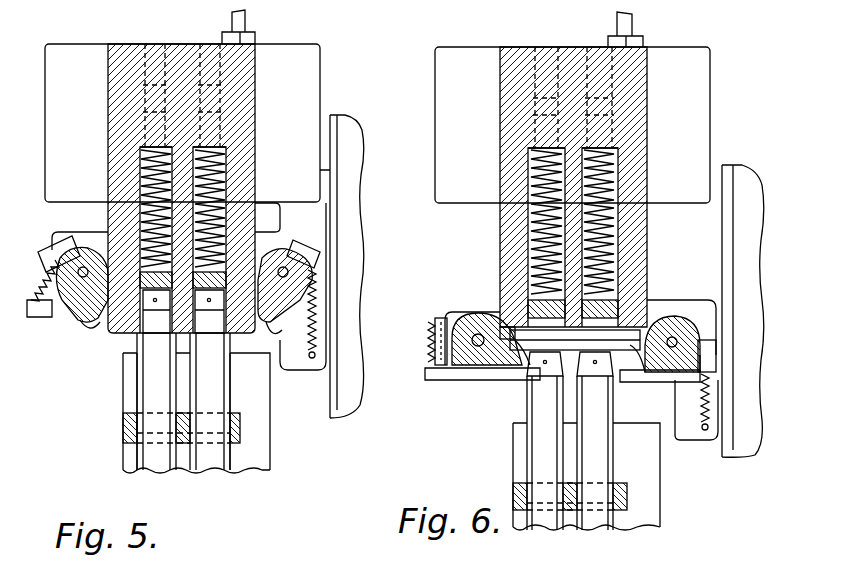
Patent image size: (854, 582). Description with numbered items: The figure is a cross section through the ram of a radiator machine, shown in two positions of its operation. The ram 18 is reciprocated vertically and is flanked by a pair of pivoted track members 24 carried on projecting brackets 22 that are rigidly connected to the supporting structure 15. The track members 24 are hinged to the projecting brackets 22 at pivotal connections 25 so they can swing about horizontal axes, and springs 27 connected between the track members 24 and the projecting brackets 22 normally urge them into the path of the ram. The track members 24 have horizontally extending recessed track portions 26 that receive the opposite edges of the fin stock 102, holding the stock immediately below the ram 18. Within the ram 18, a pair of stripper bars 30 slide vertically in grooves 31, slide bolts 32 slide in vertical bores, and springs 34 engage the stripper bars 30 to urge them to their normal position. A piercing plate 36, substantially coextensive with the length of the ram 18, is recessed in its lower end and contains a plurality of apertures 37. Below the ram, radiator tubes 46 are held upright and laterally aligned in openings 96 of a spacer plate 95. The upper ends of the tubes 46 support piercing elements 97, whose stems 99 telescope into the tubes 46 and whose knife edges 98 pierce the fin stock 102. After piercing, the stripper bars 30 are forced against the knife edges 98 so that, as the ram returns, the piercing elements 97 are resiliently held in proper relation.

In FIG. 5, the supporting structure 15 is at (355, 286).
In FIG. 6, the supporting structure 15 is at (757, 175).
In FIG. 5, the ram 18 is at (95, 55).
In FIG. 6, the ram 18 is at (712, 90).
In FIG. 5, the projecting brackets 22 is at (60, 238).
In FIG. 6, the projecting brackets 22 is at (712, 305).
In FIG. 5, the pivoted track members 24 is at (78, 310).
In FIG. 6, the pivoted track members 24 is at (465, 375).
In FIG. 5, the pivotal connection 25 is at (88, 250).
In FIG. 6, the pivotal connection 25 is at (470, 318).
In FIG. 5, the recessed track portions 26 is at (100, 322).
In FIG. 6, the recessed track portions 26 is at (520, 360).
In FIG. 5, the springs 27 is at (40, 310).
In FIG. 6, the springs 27 is at (430, 360).
In FIG. 5, the stripper bars 30 is at (212, 300).
In FIG. 6, the stripper bars 30 is at (528, 310).
In FIG. 5, the grooves 31 is at (210, 188).
In FIG. 6, the grooves 31 is at (608, 250).
In FIG. 5, the slide bolts 32 is at (205, 58).
In FIG. 6, the slide bolts 32 is at (535, 123).
In FIG. 5, the springs 34 is at (226, 160).
In FIG. 6, the springs 34 is at (530, 168).
In FIG. 5, the piercing plate 36 is at (122, 333).
In FIG. 6, the piercing plate 36 is at (660, 330).
In FIG. 6, the apertures 37 is at (550, 365).
In FIG. 5, the tubes 46 is at (202, 475).
In FIG. 6, the tubes 46 is at (513, 465).
In FIG. 5, the spacer plate 95 is at (123, 440).
In FIG. 6, the spacer plate 95 is at (628, 502).
In FIG. 5, the openings 96 is at (232, 448).
In FIG. 6, the openings 96 is at (527, 505).
In FIG. 5, the piercing elements 97 is at (165, 300).
In FIG. 6, the piercing elements 97 is at (585, 372).
In FIG. 5, the knife edges 98 is at (150, 300).
In FIG. 6, the knife edges 98 is at (540, 348).
In FIG. 5, the stems 99 is at (145, 350).
In FIG. 5, the fin stock 102 is at (232, 312).
In FIG. 6, the fin stock 102 is at (515, 332).